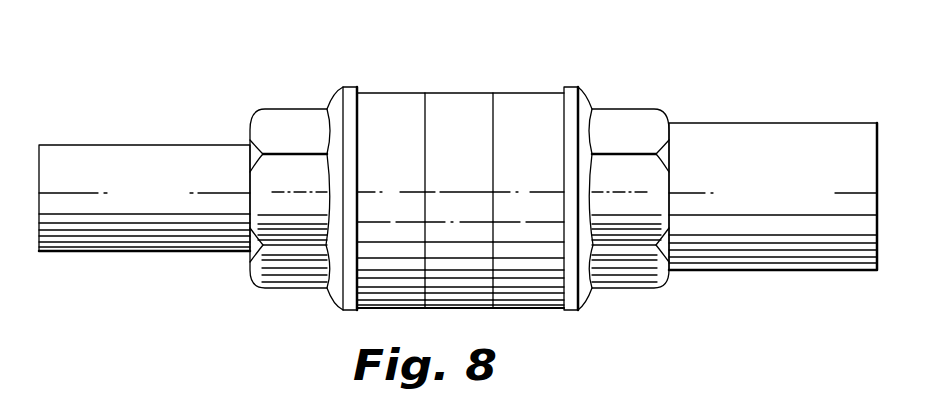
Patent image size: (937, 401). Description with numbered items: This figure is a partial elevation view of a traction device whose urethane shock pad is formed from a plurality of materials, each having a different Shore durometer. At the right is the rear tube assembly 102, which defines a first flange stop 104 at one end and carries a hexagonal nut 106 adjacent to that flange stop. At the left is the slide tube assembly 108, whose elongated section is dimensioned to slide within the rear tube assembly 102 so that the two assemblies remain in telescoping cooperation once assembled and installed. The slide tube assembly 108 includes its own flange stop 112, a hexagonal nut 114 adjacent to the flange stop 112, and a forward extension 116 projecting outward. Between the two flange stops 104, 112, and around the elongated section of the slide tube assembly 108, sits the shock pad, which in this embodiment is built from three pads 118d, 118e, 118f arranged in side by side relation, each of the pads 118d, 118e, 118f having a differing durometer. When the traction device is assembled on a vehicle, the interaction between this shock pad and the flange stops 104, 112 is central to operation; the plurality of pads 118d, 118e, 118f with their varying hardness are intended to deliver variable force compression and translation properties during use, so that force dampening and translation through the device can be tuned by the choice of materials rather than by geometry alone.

The rear tube assembly 102 is at (760, 122).
The first flange stop 104 is at (575, 87).
The hexagonal nut 106 is at (631, 108).
The slide tube assembly 108 is at (163, 87).
The flange stop 112 is at (343, 87).
The hexagonal nut 114 is at (268, 109).
The forward extension 116 is at (82, 145).
The pad 118d is at (391, 93).
The pad 118e is at (458, 93).
The pad 118f is at (530, 93).